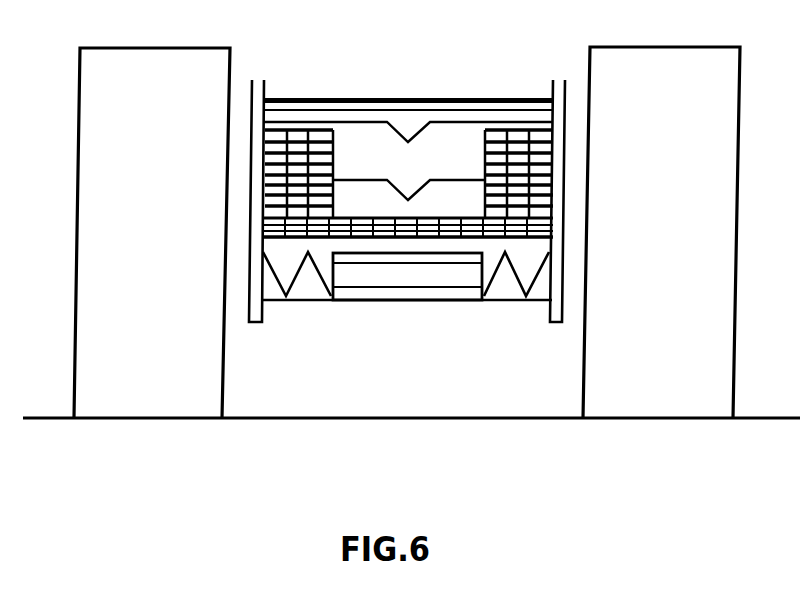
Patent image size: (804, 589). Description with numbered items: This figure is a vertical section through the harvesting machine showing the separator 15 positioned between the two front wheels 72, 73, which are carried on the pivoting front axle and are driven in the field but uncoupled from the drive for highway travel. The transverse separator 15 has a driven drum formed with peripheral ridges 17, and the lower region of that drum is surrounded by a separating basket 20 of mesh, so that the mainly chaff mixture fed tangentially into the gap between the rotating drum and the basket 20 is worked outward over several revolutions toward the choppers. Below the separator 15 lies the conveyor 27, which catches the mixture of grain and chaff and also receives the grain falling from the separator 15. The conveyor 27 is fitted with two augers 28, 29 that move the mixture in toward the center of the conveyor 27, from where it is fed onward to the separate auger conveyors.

The separator 15 is at (444, 98).
The peripheral ridges 17 is at (358, 122).
The separating basket 20 is at (517, 122).
The conveyor 27 is at (423, 290).
The auger 28 is at (516, 277).
The auger 29 is at (298, 273).
The front wheel 72 is at (653, 398).
The front wheel 73 is at (138, 405).